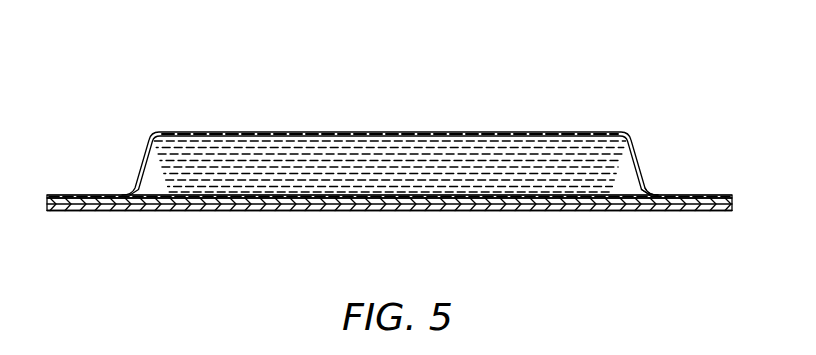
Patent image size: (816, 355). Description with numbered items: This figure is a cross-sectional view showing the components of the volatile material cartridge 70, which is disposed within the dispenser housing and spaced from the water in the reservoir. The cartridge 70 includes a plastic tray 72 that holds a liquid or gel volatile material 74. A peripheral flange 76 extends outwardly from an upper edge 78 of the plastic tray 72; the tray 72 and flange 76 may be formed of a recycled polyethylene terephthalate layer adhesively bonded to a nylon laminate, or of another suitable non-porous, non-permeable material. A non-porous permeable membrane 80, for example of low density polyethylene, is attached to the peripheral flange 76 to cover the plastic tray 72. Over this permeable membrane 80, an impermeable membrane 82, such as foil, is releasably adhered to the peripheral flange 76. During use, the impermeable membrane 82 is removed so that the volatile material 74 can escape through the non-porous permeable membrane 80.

The volatile material cartridge 70 is at (334, 98).
The plastic tray 72 is at (440, 133).
The volatile material 74 is at (565, 153).
The peripheral flange 76 is at (715, 195).
The upper edge 78 is at (652, 195).
The non-porous permeable membrane 80 is at (405, 202).
The impermeable membrane 82 is at (518, 212).